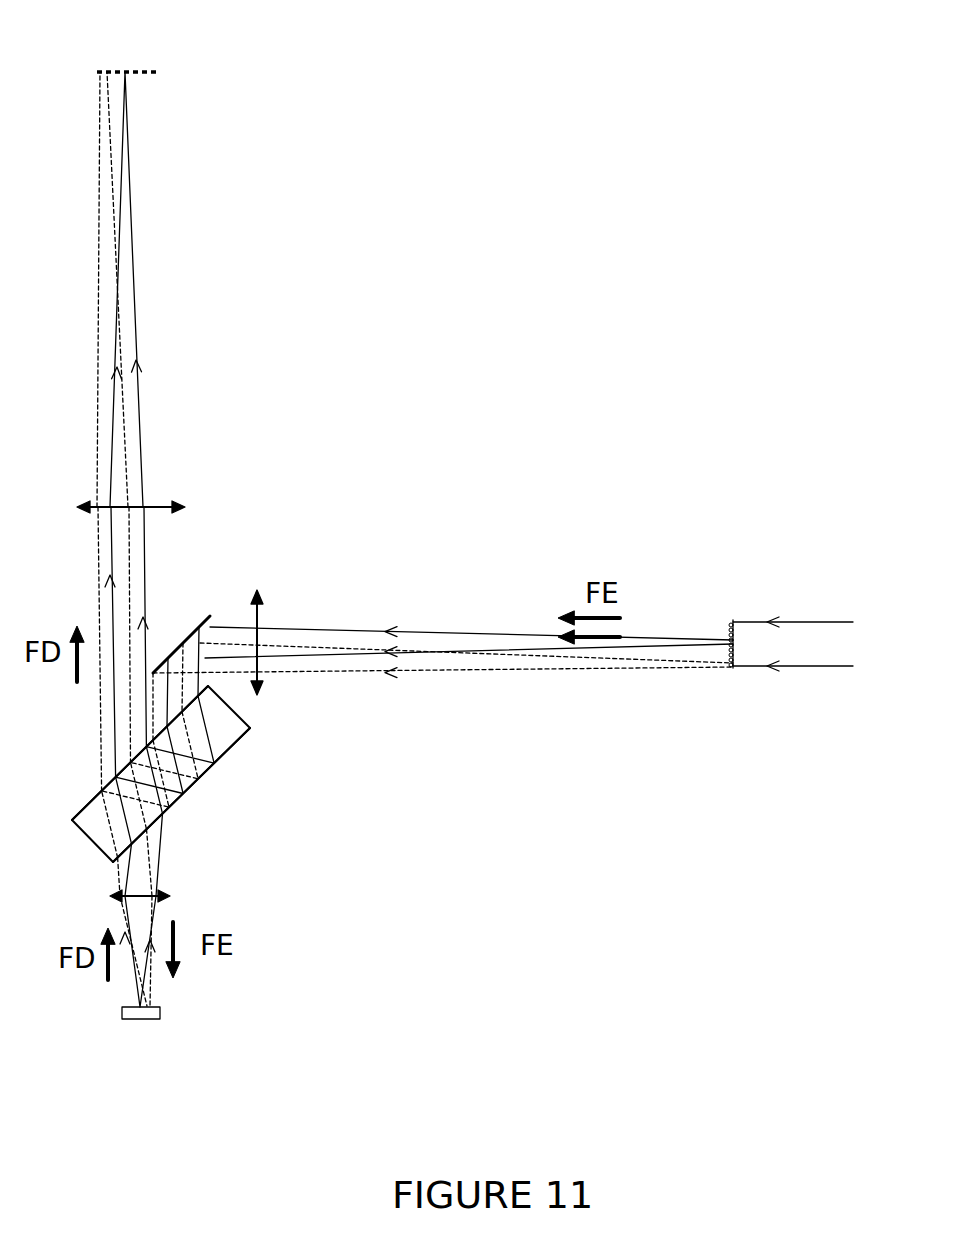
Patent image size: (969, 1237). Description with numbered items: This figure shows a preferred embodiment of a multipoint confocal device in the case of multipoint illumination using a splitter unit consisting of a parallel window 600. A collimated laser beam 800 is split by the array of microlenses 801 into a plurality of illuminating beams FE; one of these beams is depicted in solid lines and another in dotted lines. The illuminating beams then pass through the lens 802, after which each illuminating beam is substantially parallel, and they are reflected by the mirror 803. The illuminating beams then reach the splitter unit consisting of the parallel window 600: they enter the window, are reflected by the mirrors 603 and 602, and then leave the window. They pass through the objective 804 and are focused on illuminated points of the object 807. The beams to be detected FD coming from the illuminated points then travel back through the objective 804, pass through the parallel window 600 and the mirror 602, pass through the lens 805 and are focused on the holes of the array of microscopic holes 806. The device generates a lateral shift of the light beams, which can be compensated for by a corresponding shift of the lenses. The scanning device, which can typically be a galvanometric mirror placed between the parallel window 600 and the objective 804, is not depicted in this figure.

The parallel window 600 is at (257, 752).
The mirror 602 is at (91, 773).
The mirror 603 is at (201, 802).
The collimated laser beam 800 is at (797, 605).
The array of microlenses 801 is at (738, 686).
The lens 802 is at (277, 697).
The mirror 803 is at (204, 598).
The objective 804 is at (101, 879).
The lens 805 is at (92, 484).
The array of microscopic holes 806 is at (120, 52).
The object 807 is at (113, 1034).